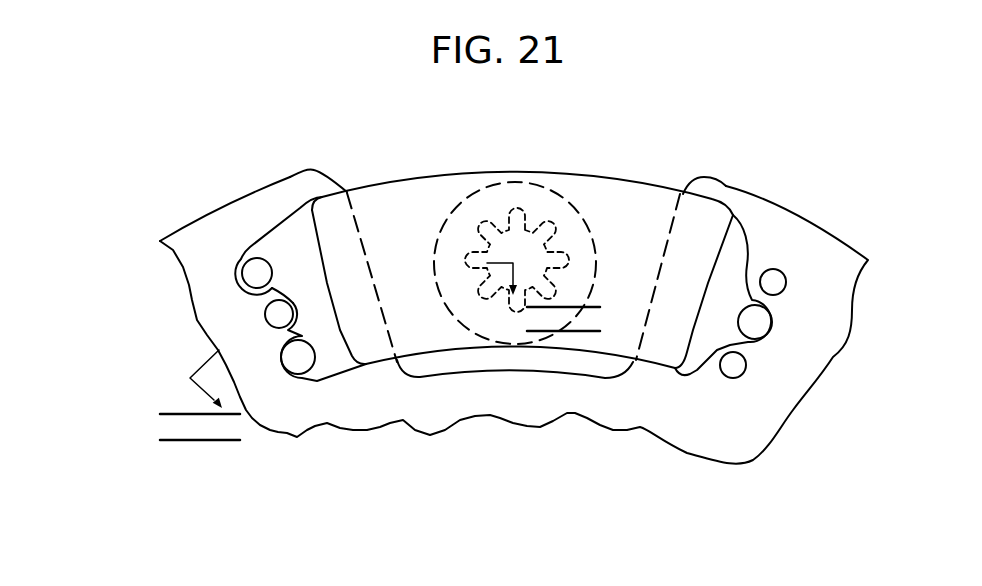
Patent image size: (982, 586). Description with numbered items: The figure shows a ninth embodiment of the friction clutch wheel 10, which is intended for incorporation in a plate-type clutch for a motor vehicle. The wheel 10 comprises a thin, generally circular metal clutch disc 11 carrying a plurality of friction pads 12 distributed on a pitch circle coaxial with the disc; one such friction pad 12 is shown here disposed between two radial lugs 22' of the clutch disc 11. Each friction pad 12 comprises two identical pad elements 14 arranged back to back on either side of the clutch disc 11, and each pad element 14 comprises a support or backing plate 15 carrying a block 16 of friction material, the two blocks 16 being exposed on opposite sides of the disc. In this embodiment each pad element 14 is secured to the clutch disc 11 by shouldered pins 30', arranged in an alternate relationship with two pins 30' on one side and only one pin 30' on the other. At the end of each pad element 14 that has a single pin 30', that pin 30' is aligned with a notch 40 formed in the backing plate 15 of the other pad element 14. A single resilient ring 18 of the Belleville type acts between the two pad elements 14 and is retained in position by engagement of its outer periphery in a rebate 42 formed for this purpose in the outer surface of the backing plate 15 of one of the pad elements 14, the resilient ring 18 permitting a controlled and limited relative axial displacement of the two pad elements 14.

The friction clutch wheel 10 is at (116, 212).
The clutch disc 11 is at (795, 195).
The friction pad 12 is at (607, 150).
The pad element 14 is at (553, 160).
The backing plate 15 is at (360, 400).
The block of friction material 16 is at (409, 240).
The resilient ring 18 is at (467, 180).
The radial lug 22' is at (507, 144).
The shouldered pin 30' is at (513, 314).
The notch 40 is at (293, 302).
The rebate 42 is at (598, 248).